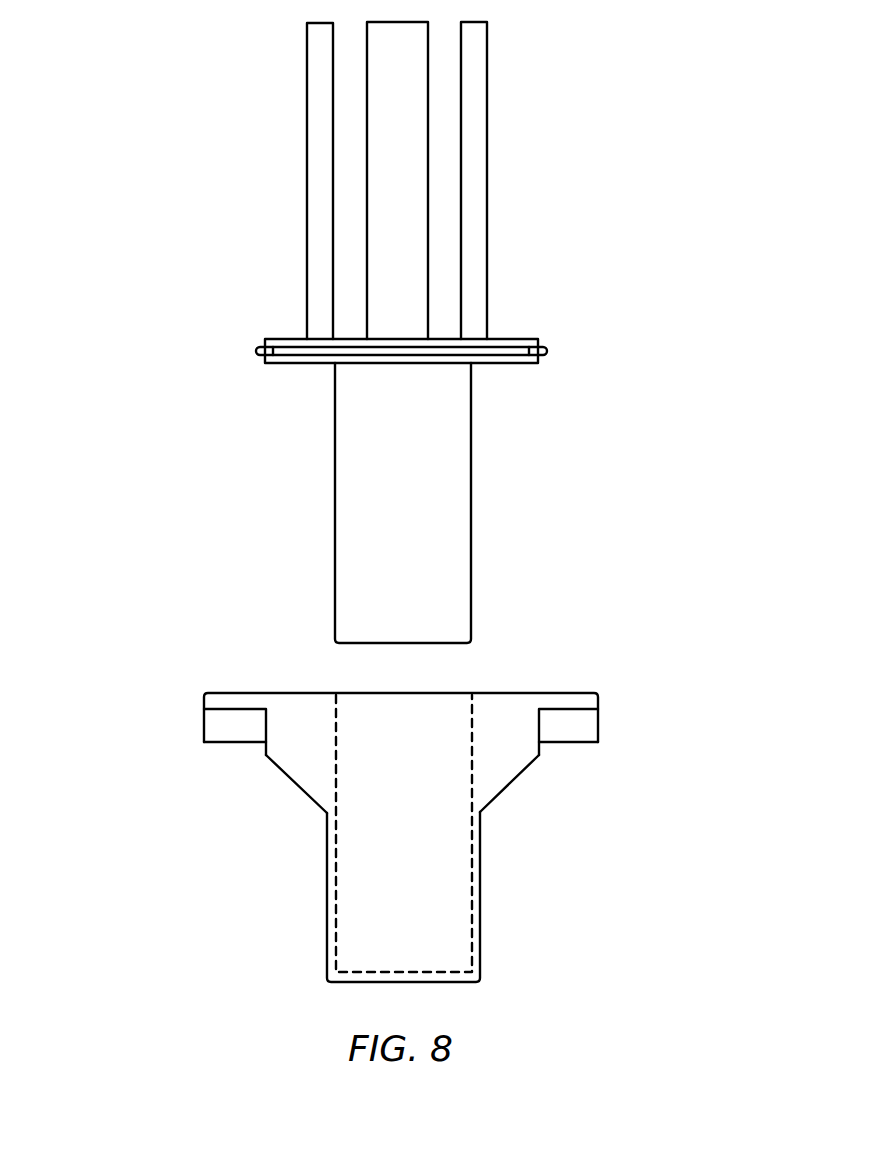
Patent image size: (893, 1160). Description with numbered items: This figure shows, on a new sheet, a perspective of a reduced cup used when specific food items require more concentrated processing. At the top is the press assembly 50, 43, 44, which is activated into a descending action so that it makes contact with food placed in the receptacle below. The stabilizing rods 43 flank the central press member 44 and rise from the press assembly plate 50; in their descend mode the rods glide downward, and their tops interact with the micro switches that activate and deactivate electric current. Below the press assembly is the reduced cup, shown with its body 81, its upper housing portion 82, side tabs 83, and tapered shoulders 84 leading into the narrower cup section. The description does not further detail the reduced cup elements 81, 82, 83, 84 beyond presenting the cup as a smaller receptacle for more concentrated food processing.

The stabilizing rods 43 is at (316, 161).
The press assembly 44 is at (402, 252).
The press assembly 50 is at (523, 340).
The plug body 81 is at (453, 508).
The receptacle housing 82 is at (443, 692).
The mounting tabs 83 is at (208, 723).
The tapered shoulders 84 is at (305, 777).